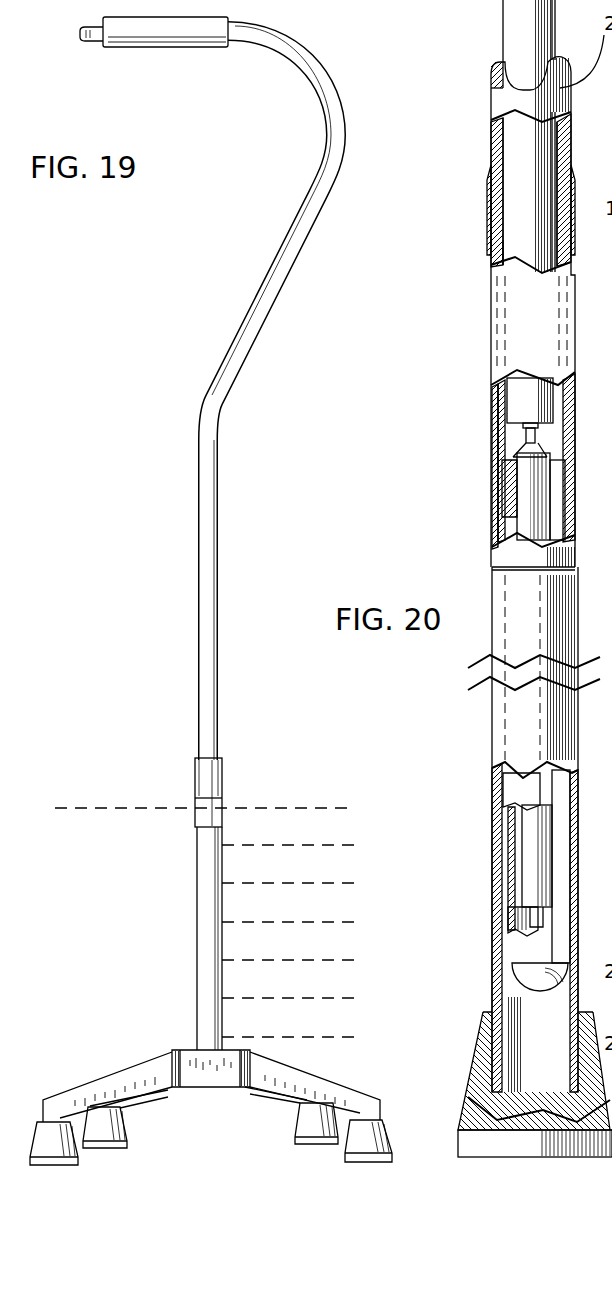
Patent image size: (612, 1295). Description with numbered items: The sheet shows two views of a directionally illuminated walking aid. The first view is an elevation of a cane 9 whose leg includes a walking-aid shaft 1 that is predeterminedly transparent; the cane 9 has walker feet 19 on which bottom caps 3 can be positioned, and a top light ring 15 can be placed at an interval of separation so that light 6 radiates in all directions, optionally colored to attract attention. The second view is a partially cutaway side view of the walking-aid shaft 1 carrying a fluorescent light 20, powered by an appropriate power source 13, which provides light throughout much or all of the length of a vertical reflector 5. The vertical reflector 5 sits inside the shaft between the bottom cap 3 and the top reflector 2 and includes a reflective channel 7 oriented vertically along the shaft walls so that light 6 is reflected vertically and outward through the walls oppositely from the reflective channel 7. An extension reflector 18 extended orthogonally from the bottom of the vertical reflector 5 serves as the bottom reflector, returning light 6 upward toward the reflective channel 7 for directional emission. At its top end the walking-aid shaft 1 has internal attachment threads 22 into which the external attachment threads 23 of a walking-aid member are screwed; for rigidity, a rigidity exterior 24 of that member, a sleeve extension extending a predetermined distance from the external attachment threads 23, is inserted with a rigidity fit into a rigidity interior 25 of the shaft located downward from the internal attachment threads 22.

In FIG. 19, the walking-aid shaft 1 is at (197, 965).
In FIG. 20, the walking-aid shaft 1 is at (492, 718).
In FIG. 20, the top reflector 2 is at (525, 440).
In FIG. 19, the bottom cap 3 is at (110, 1128).
In FIG. 20, the bottom cap 3 is at (478, 1062).
In FIG. 20, the vertical reflector 5 is at (525, 790).
In FIG. 19, the light 6 is at (278, 808).
In FIG. 20, the reflective channel 7 is at (517, 918).
In FIG. 19, the cane 9 is at (383, 101).
In FIG. 20, the power source 13 is at (518, 405).
In FIG. 19, the top light ring 15 is at (212, 827).
In FIG. 20, the extension reflector 18 is at (543, 980).
In FIG. 19, the walker feet 19 is at (352, 1120).
In FIG. 20, the fluorescent light 20 is at (527, 480).
In FIG. 20, the internal attachment threads 22 is at (512, 194).
In FIG. 20, the external attachment threads 23 is at (510, 230).
In FIG. 20, the rigidity exterior 24 is at (512, 259).
In FIG. 20, the rigidity interior 25 is at (500, 395).